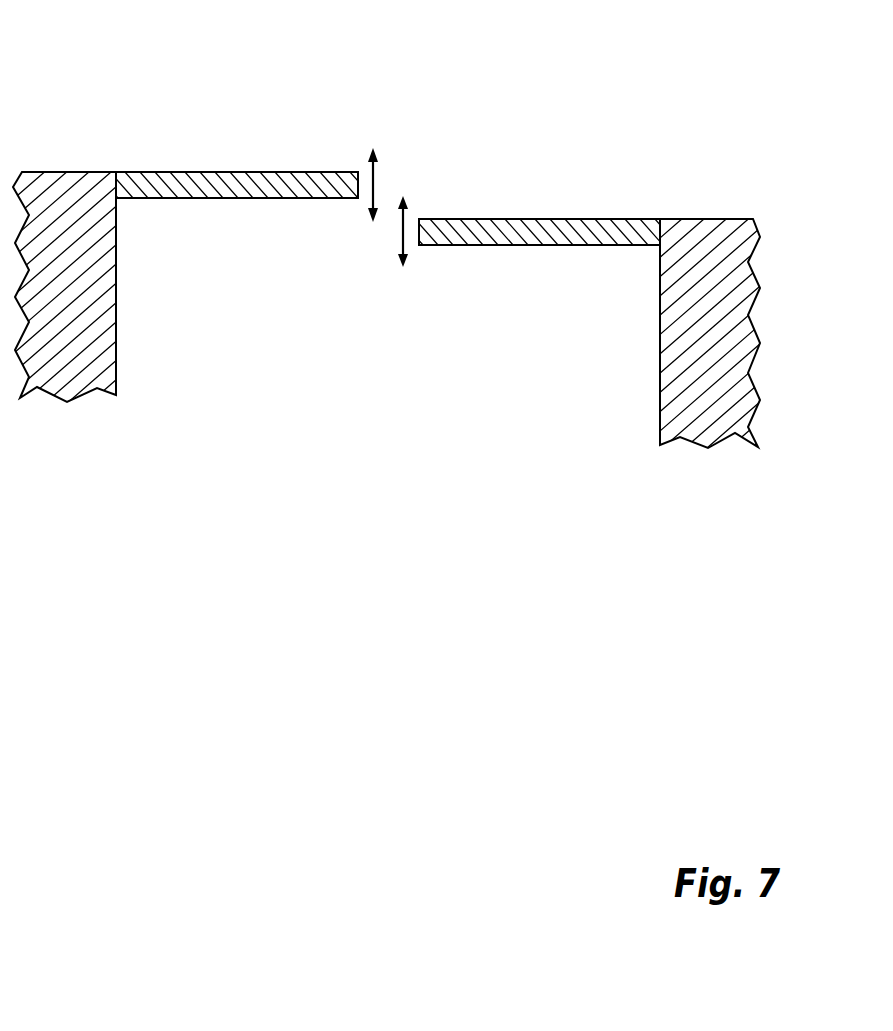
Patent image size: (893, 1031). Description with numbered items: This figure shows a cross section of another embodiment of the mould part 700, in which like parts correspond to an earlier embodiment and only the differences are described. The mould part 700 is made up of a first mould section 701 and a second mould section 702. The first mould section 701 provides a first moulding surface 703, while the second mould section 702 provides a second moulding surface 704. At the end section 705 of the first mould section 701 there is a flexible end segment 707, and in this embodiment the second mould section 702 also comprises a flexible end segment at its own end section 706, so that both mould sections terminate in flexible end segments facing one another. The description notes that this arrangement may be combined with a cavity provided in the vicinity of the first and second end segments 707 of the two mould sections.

The mould part 700 is at (687, 65).
The first mould section 701 is at (65, 207).
The second mould section 702 is at (710, 254).
The first moulding surface 703 is at (93, 172).
The second moulding surface 704 is at (683, 219).
The end section of first mould section 705 is at (361, 183).
The end section of second mould section 706 is at (418, 231).
The end segment 707 is at (272, 183).